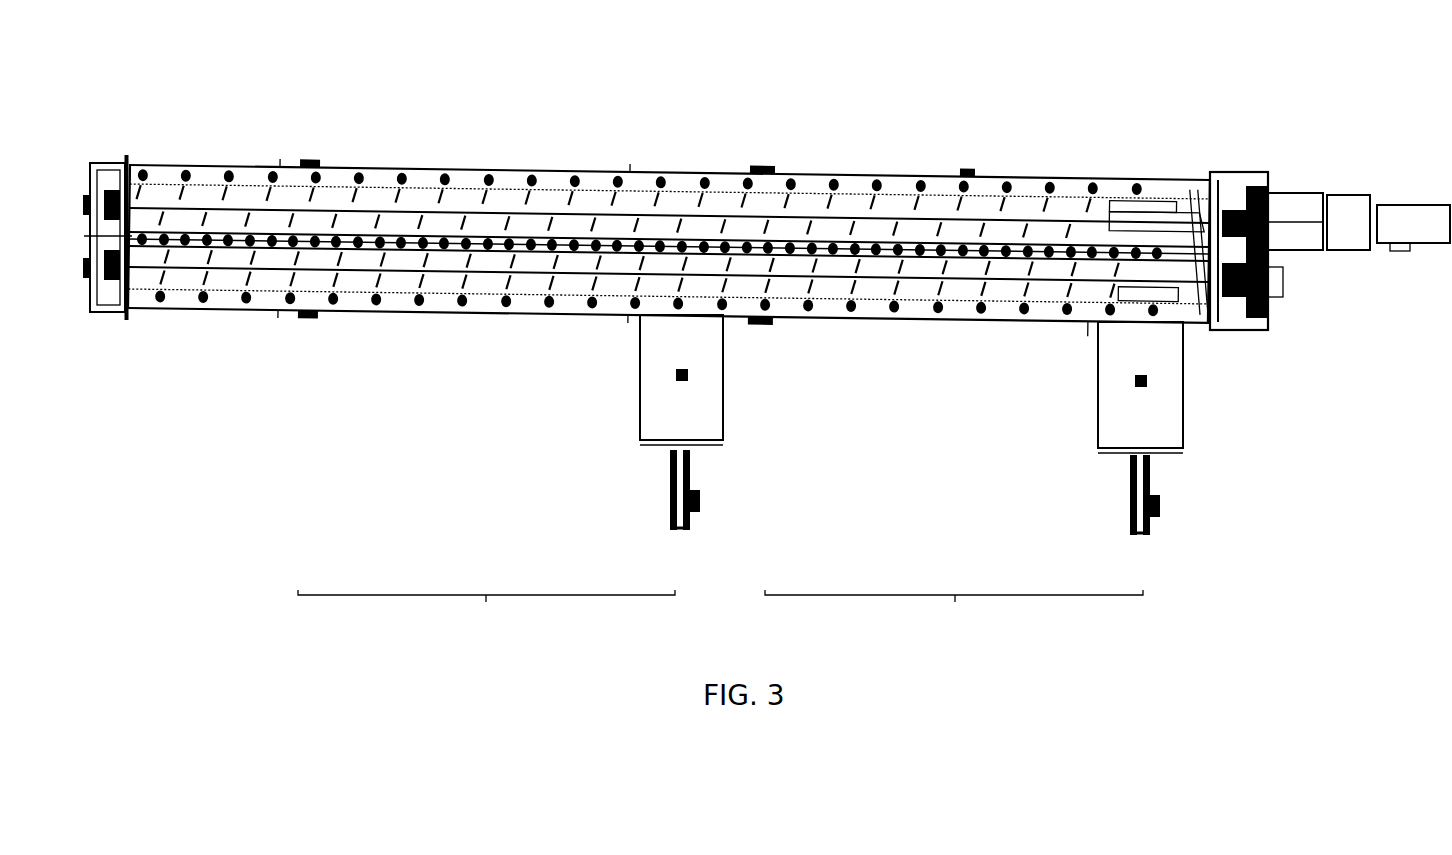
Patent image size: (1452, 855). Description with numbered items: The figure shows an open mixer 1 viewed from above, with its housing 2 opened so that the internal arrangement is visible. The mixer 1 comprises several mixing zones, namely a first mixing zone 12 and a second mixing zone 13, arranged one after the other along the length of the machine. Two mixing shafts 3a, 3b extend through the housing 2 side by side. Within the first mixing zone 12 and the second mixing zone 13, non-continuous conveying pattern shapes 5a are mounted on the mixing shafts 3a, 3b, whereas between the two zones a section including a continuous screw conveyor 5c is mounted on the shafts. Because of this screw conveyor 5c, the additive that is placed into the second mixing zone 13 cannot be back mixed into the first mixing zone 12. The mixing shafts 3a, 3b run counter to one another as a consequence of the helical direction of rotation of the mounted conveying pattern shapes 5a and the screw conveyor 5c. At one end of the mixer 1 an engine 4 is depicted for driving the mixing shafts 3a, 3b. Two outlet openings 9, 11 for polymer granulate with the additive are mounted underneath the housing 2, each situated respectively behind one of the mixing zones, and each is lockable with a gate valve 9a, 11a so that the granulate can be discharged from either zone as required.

The mixer 1 is at (704, 120).
The housing 2 is at (213, 165).
The mixing shaft 3a is at (450, 205).
The mixing shaft 3b is at (485, 287).
The engine 4 is at (1398, 210).
The conveying pattern shapes 5a is at (337, 297).
The screw conveyor 5c is at (762, 300).
The outlet opening 9 is at (640, 315).
The gate valve 9a is at (695, 402).
The outlet opening 11 is at (1097, 322).
The gate valve 11a is at (1155, 410).
The first mixing zone 12 is at (486, 621).
The second mixing zone 13 is at (954, 621).